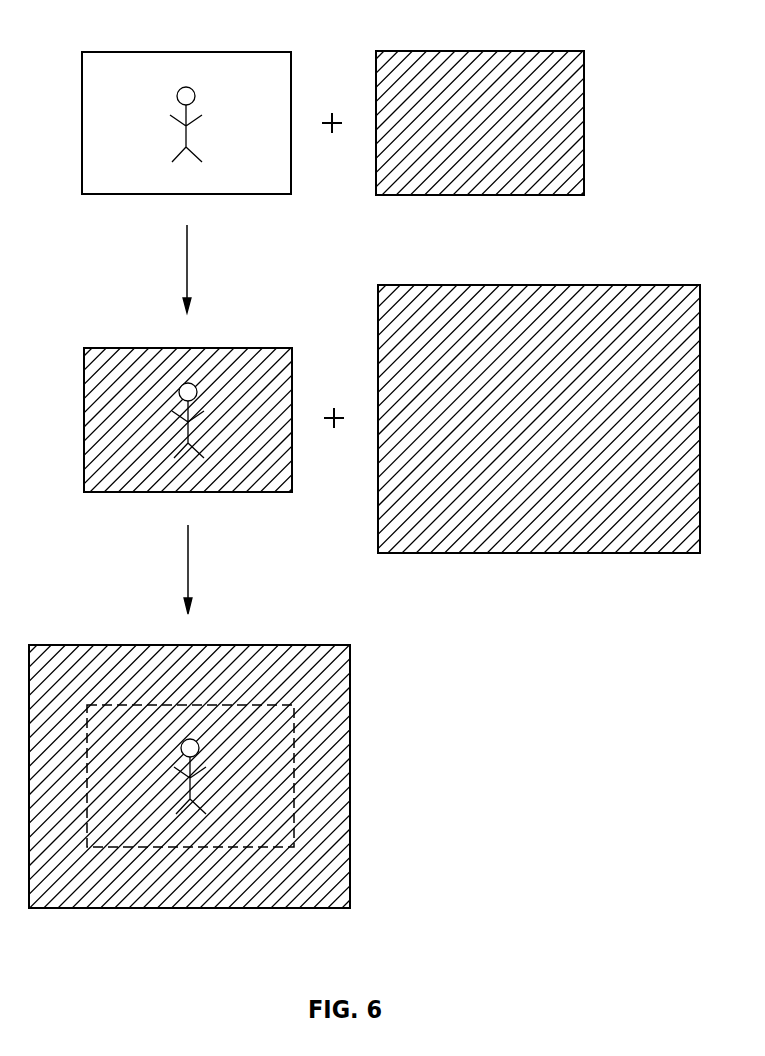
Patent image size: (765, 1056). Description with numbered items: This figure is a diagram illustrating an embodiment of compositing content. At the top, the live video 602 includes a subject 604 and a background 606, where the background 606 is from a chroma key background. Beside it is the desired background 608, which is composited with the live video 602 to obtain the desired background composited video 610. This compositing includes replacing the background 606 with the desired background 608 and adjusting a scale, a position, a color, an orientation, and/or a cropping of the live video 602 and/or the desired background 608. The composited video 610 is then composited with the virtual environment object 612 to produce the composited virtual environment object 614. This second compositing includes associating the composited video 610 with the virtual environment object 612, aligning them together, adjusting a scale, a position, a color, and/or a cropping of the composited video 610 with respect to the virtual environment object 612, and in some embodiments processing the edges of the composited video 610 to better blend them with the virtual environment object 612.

The live video 602 is at (227, 52).
The subject 604 is at (196, 97).
The background 606 is at (270, 175).
The desired background 608 is at (520, 51).
The desired background composited video 610 is at (230, 348).
The virtual environment object 612 is at (638, 285).
The composited virtual environment object 614 is at (288, 645).